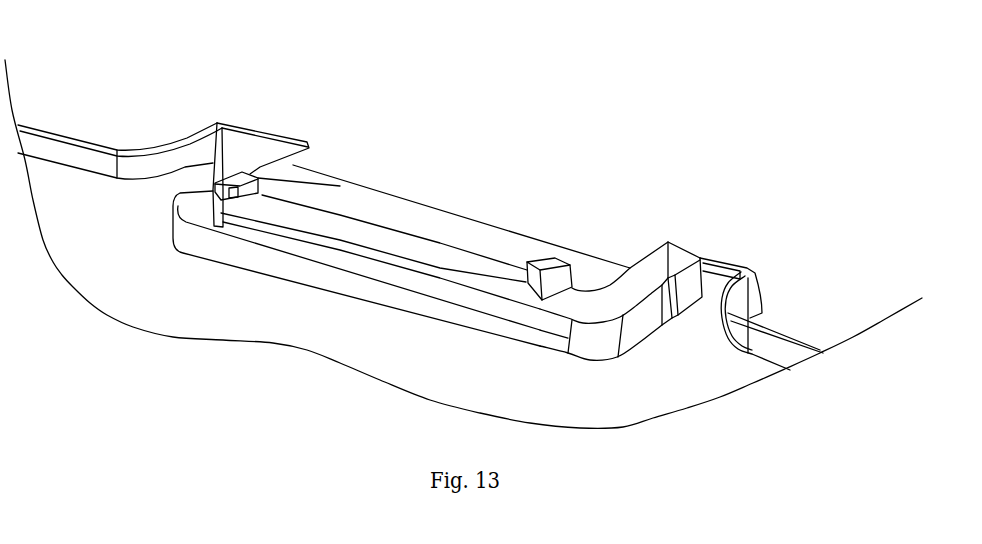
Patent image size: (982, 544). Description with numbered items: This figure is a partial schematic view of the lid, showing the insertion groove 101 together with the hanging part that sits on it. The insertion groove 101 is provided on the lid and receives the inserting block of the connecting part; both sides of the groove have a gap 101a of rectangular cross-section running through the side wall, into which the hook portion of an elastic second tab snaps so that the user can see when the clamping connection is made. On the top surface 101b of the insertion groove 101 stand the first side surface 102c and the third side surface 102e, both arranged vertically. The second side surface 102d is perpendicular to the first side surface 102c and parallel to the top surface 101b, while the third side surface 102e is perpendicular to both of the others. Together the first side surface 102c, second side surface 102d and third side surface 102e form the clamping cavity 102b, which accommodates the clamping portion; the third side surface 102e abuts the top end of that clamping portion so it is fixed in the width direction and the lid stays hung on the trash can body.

The insertion groove 101 is at (588, 266).
The gap 101a is at (672, 278).
The top surface of the insertion groove 101b is at (588, 313).
The clamping cavity 102b is at (243, 200).
The first side surface 102c is at (192, 196).
The second side surface 102d is at (235, 185).
The third side surface 102e is at (340, 186).